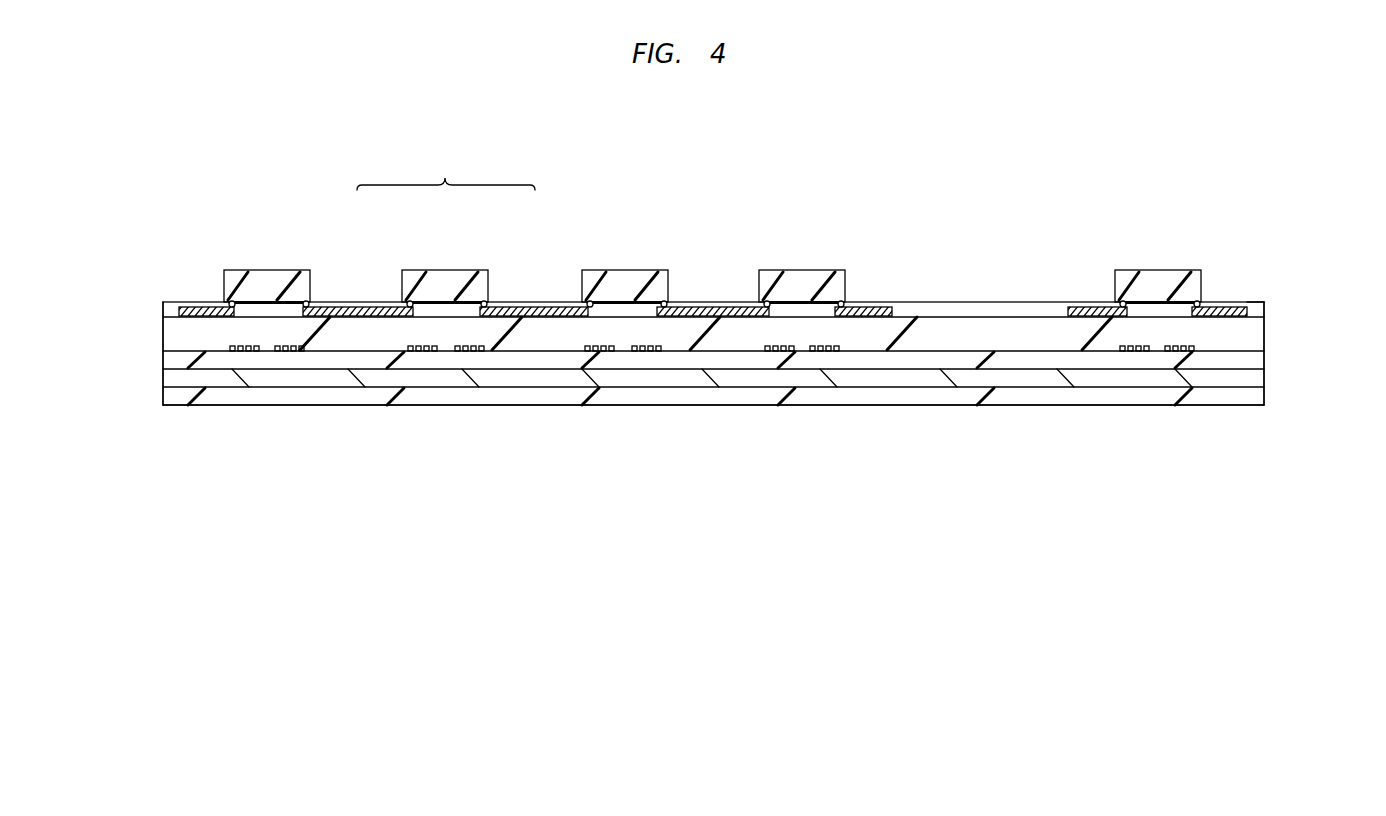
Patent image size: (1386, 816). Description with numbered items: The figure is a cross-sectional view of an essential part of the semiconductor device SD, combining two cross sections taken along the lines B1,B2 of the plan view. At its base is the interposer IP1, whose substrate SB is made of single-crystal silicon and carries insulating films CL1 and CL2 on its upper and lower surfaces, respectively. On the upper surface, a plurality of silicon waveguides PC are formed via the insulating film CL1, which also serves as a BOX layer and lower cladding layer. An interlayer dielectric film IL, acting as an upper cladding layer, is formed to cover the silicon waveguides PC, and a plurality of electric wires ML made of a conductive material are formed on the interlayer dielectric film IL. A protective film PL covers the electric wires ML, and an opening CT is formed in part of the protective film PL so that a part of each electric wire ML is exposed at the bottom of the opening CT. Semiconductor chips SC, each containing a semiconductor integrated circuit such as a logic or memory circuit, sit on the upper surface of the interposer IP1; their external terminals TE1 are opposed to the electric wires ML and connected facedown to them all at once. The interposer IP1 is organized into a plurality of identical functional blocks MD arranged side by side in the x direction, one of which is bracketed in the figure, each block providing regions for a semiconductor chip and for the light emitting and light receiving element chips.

The semiconductor device SD is at (968, 156).
The semiconductor chip SC is at (262, 270).
The opening CT is at (300, 298).
The external terminal TE1 is at (231, 300).
The electric wire ML is at (345, 307).
The protective film PL is at (384, 302).
The interlayer dielectric film IL is at (1028, 325).
The insulating film CL1 is at (1256, 360).
The substrate SB is at (1256, 378).
The insulating film CL2 is at (1256, 398).
The silicon waveguide PC is at (257, 351).
The functional block MD is at (446, 166).
The interposer IP1 is at (1239, 302).
The section lines B1-B1 and B2-B2 B1,B2 is at (715, 379).